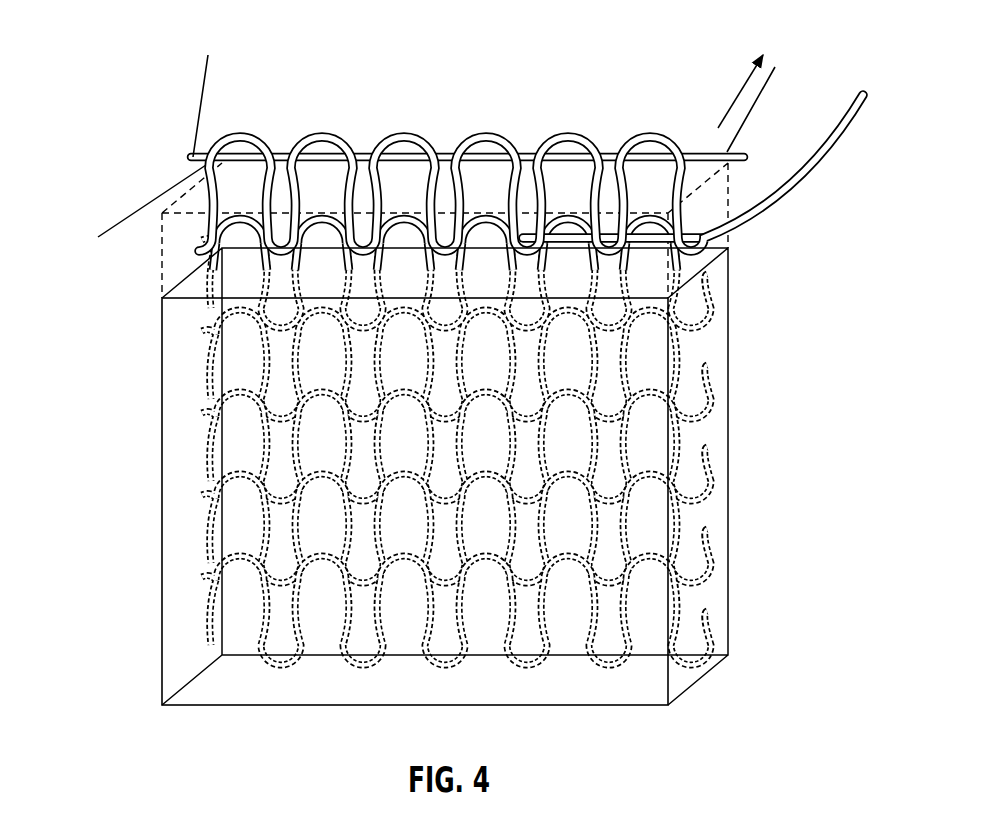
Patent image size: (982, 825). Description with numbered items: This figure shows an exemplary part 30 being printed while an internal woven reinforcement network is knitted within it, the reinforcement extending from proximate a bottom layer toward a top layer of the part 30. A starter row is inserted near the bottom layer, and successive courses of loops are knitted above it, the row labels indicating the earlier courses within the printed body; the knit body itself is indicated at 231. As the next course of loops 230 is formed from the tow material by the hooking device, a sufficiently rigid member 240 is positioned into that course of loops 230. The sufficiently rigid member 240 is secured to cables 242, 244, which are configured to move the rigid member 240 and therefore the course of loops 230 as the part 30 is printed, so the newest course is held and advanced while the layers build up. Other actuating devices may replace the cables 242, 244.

The part 30 is at (118, 400).
The course of loops 230 is at (210, 175).
The knit structure body 231 is at (683, 347).
The sufficiently rigid member 240 is at (447, 150).
The cable 242 is at (203, 107).
The cable 244 is at (178, 75).